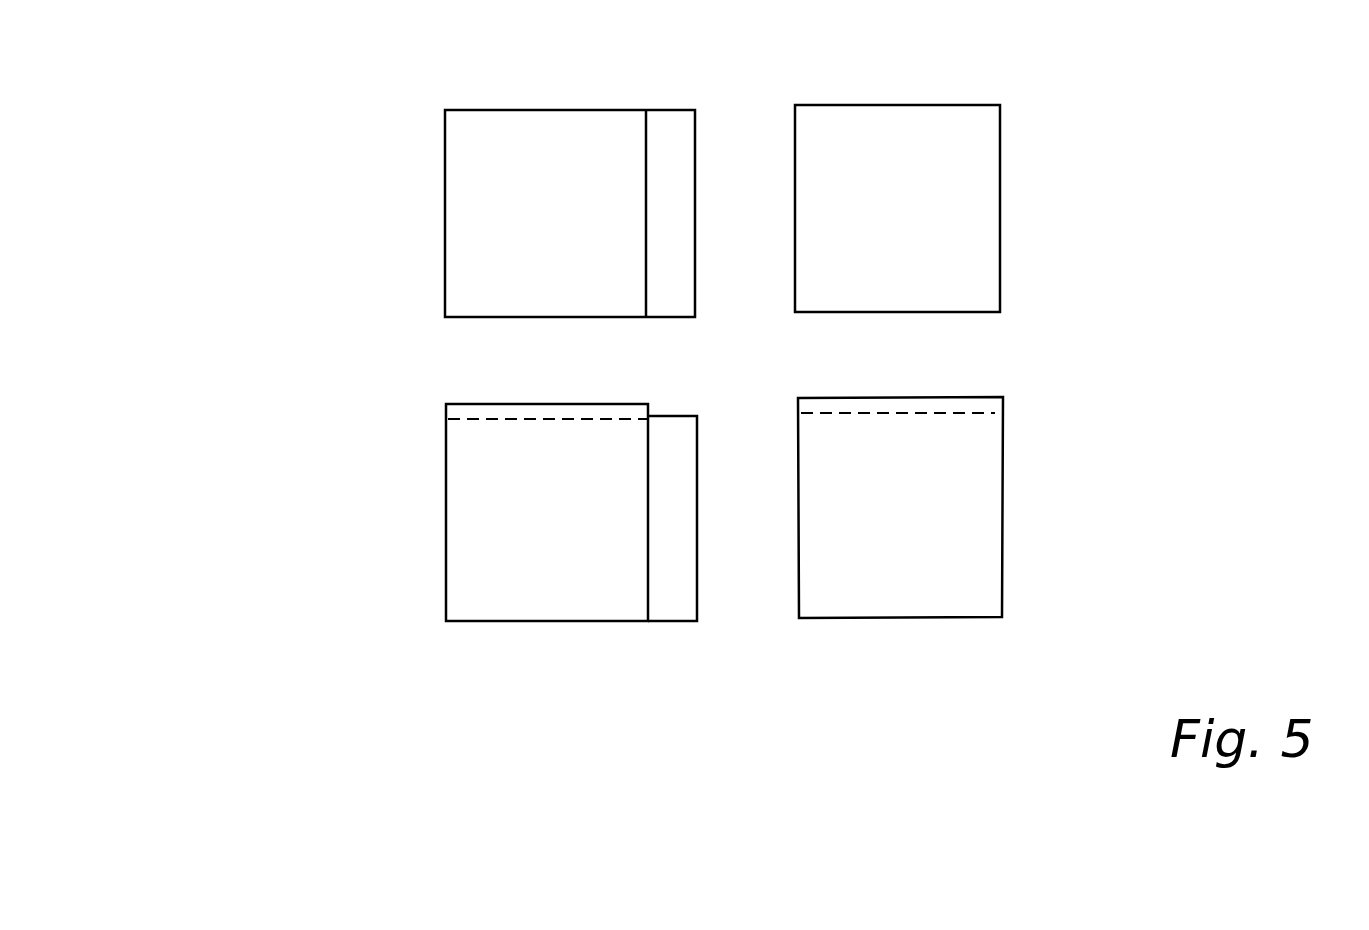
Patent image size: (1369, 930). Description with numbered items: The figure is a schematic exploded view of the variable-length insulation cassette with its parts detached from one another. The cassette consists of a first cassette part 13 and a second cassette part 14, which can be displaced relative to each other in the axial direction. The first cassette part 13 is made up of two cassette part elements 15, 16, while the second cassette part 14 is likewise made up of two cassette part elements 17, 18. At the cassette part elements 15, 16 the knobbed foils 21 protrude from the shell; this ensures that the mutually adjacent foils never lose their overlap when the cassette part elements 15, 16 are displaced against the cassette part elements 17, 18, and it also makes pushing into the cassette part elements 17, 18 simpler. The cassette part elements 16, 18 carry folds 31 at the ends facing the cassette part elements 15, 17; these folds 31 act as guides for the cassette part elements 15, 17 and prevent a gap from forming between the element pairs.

The first cassette part 13 is at (312, 226).
The second cassette part 14 is at (1165, 228).
The cassette part element 15 is at (553, 228).
The cassette part element 16 is at (560, 545).
The cassette part element 17 is at (912, 226).
The cassette part element 18 is at (916, 537).
The knobbed foil 21 is at (668, 117).
The fold 31 is at (448, 411).